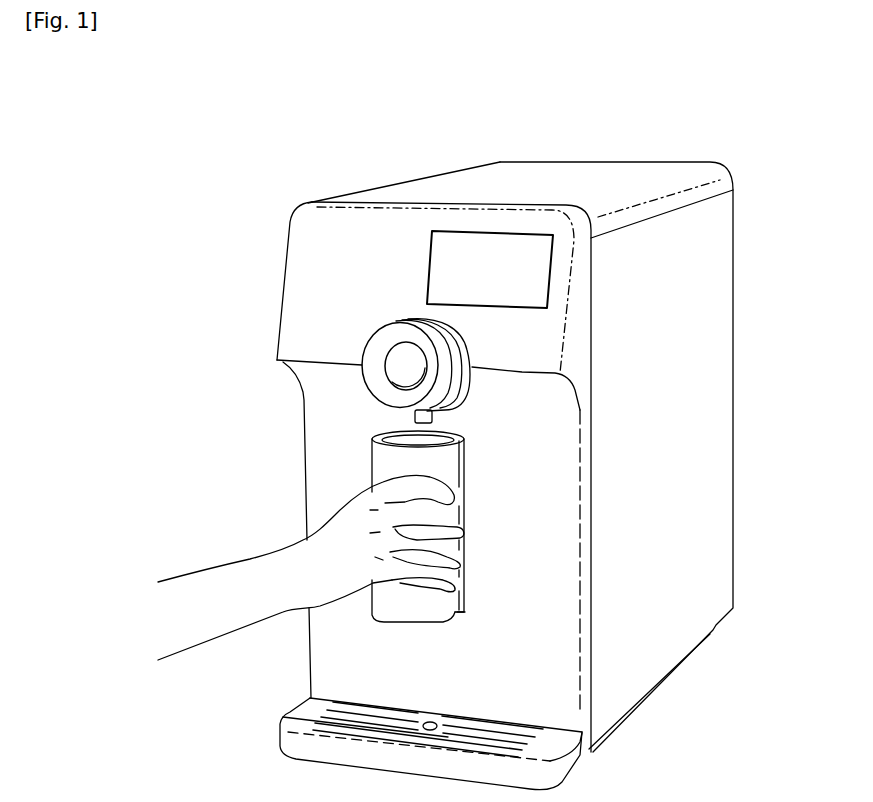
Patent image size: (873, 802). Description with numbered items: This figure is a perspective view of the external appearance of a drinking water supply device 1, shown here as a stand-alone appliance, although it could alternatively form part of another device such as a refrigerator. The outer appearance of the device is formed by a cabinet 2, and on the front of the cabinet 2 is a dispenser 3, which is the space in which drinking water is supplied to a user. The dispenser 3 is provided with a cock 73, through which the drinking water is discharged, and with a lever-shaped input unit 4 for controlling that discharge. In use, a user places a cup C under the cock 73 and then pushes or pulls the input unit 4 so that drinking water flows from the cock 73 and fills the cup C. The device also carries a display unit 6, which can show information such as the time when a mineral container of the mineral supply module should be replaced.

The drinking water supply device 1 is at (614, 141).
The cabinet 2 is at (707, 270).
The dispenser 3 is at (547, 433).
The input unit 4 is at (457, 592).
The display unit 6 is at (462, 231).
The cock 73 is at (415, 418).
The cup C is at (385, 460).